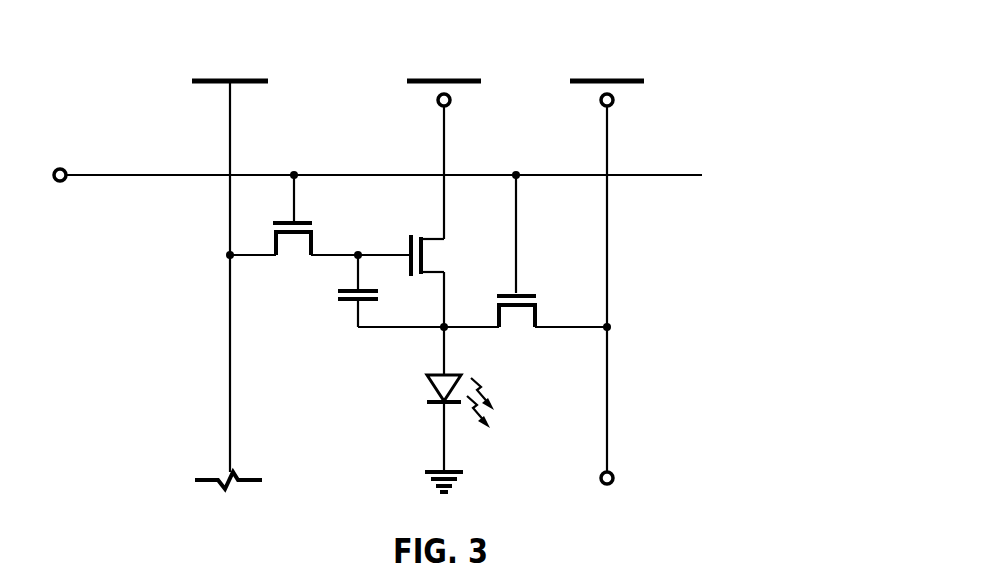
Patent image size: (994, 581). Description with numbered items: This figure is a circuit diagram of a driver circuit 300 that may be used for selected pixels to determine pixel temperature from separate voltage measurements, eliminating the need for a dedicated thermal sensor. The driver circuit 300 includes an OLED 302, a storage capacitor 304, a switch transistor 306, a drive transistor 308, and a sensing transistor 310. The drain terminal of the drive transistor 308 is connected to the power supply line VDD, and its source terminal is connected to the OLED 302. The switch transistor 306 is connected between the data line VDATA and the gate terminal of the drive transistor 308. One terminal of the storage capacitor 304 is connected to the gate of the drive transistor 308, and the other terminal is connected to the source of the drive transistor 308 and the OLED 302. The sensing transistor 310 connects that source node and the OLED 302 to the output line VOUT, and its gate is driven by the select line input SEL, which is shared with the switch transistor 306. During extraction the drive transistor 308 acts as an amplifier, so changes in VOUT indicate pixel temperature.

The driver circuit 300 is at (430, 249).
The OLED 302 is at (428, 390).
The storage capacitor 304 is at (337, 294).
The switch transistor 306 is at (313, 228).
The drive transistor 308 is at (444, 259).
The sensing transistor 310 is at (538, 298).